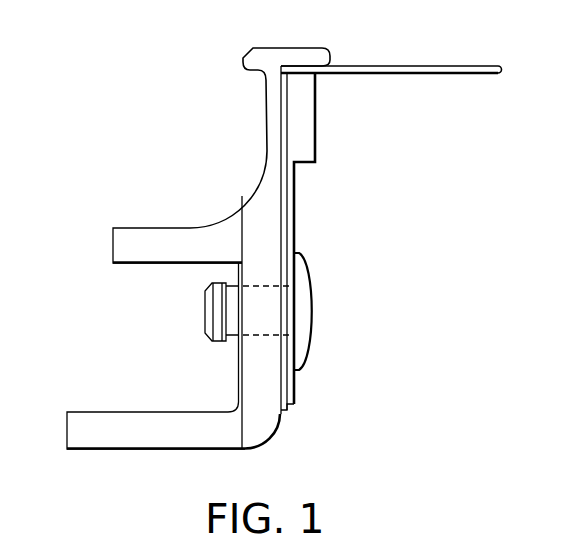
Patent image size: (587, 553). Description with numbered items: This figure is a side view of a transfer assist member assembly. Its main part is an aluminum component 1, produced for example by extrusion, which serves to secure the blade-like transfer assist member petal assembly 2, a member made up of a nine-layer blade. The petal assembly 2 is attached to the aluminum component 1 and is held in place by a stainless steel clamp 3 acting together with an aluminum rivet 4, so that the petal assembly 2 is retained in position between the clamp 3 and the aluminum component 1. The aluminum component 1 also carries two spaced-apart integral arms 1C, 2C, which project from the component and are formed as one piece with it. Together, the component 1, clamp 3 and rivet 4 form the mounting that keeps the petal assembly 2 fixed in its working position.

The aluminum component 1 is at (257, 200).
The integral arm 1C is at (127, 247).
The integral arm 2C is at (75, 430).
The transfer assist member petal assembly 2 is at (402, 61).
The stainless steel clamp 3 is at (308, 128).
The aluminum rivet 4 is at (302, 325).